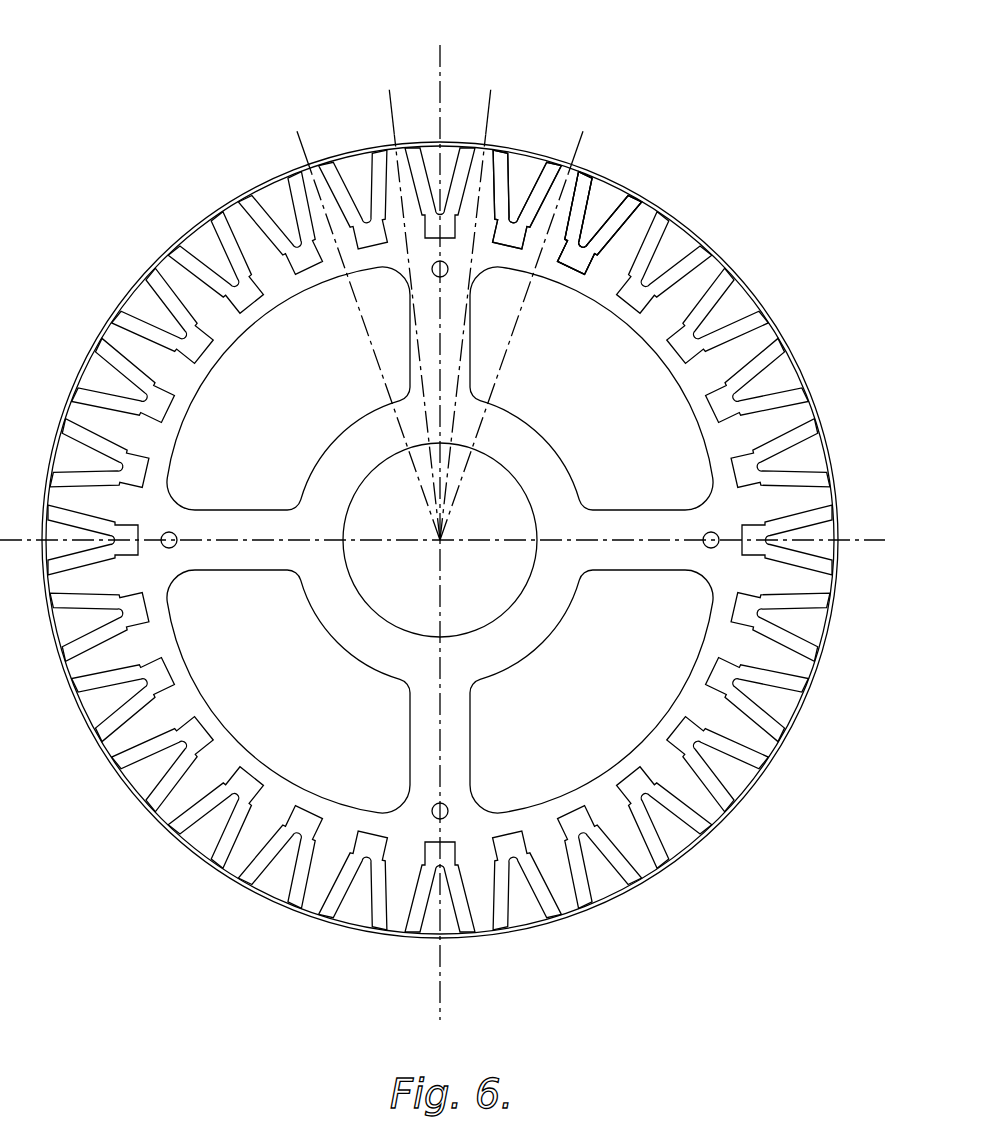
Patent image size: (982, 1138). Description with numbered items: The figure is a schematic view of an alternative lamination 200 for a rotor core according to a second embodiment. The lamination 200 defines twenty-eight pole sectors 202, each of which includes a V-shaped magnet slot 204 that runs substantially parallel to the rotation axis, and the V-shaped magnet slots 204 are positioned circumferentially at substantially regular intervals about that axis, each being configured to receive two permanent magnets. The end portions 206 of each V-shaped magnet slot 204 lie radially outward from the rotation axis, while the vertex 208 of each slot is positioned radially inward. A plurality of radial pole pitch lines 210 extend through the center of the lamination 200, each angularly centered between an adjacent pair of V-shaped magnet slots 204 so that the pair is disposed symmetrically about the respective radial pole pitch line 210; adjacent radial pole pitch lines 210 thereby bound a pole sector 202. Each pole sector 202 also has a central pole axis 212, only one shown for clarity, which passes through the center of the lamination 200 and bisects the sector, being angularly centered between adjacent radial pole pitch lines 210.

The lamination 200 is at (745, 135).
The pole sector 202 is at (355, 150).
The V-shaped magnet slot 204 is at (583, 207).
The end portion 206 is at (583, 170).
The vertex 208 is at (575, 255).
The radial pole pitch line 210 is at (390, 96).
The central pole axis 212 is at (443, 60).